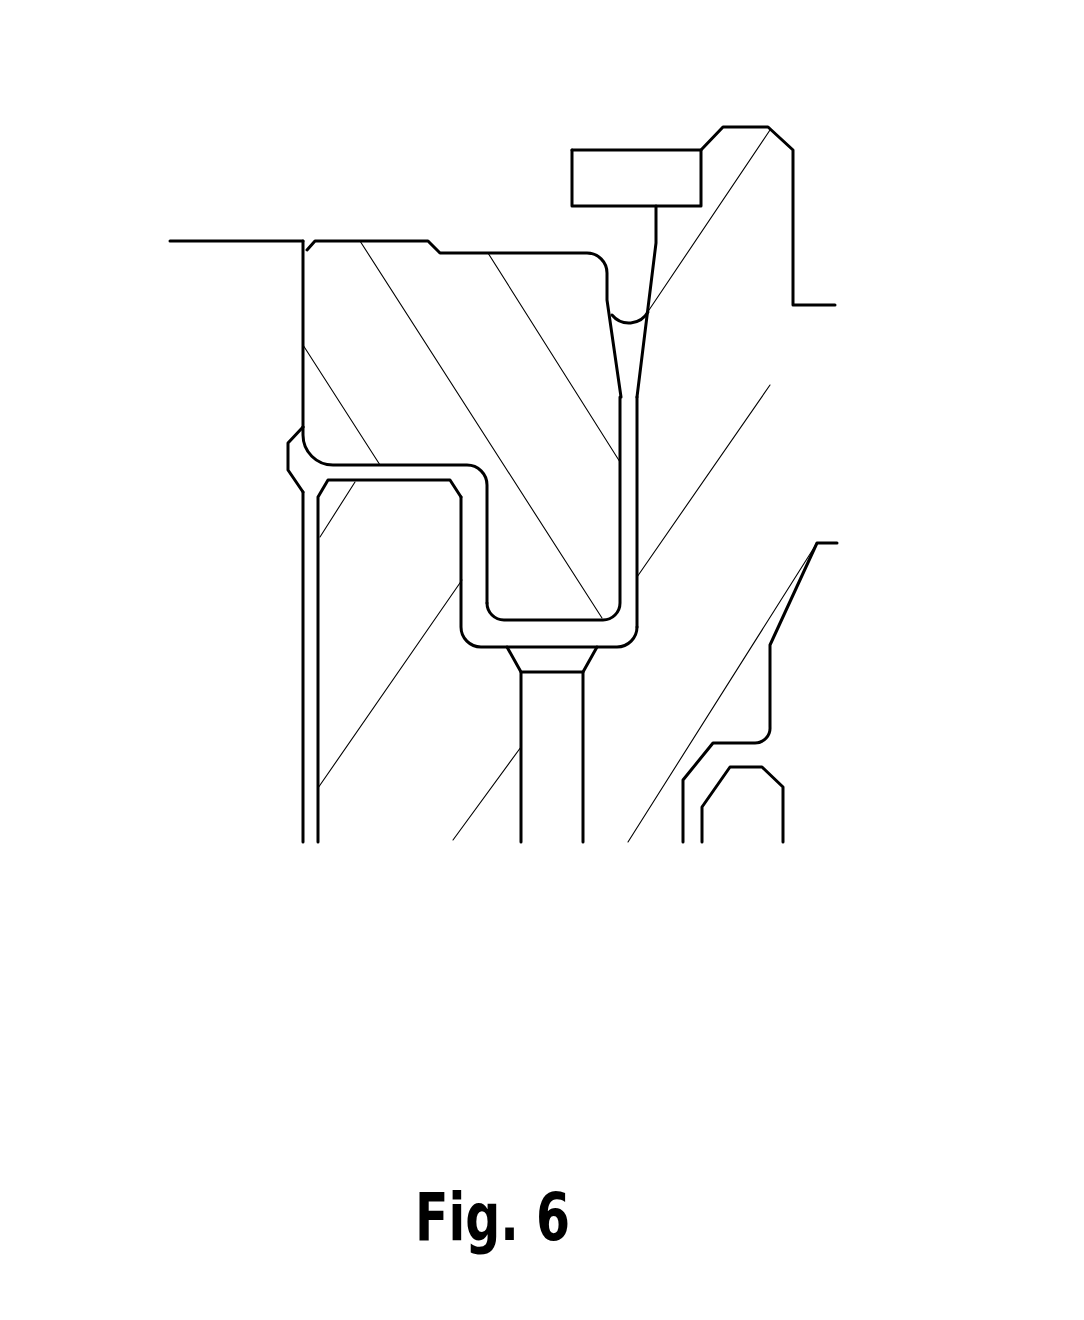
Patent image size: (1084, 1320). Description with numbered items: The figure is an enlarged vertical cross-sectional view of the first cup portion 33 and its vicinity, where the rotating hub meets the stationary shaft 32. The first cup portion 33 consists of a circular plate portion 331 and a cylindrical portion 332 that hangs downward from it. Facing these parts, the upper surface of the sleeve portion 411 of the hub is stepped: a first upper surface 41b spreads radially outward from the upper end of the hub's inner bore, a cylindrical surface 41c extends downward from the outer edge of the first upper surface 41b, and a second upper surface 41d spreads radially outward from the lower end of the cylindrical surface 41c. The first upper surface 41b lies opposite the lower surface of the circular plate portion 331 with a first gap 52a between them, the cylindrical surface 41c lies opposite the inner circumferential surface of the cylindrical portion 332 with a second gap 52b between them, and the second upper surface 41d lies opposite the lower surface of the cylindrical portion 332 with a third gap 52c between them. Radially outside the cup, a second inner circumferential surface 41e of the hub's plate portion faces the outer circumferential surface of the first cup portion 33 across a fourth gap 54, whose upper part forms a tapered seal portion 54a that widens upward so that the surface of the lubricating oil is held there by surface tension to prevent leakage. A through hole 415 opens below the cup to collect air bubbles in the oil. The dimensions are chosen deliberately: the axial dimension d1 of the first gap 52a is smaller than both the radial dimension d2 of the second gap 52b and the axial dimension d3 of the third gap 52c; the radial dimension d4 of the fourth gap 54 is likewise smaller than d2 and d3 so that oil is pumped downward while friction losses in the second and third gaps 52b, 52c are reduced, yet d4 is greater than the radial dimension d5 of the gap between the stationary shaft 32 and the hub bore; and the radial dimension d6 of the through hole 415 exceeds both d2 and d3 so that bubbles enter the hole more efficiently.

The stationary shaft 32 is at (230, 241).
The first cup portion 33 is at (533, 106).
The circular plate portion 331 is at (412, 365).
The cylindrical portion 332 is at (537, 527).
The first upper surface 41b is at (415, 465).
The cylindrical surface 41c is at (627, 477).
The second upper surface 41d is at (521, 645).
The second inner circumferential surface 41e is at (630, 432).
The sleeve portion 411 is at (367, 697).
The through hole 415 is at (547, 738).
The first gap 52a is at (350, 470).
The second gap 52b is at (475, 533).
The third gap 52c is at (547, 628).
The fourth gap 54 is at (462, 558).
The tapered seal portion 54a is at (629, 354).
The axial dimension of the first gap d1 is at (318, 481).
The radial dimension of the second gap d2 is at (461, 650).
The axial dimension of the third gap d3 is at (625, 619).
The radial dimension of the fourth gap d4 is at (636, 338).
The radial dimension of the gap between the stationary shaft and the hub d5 is at (303, 858).
The radial dimension of the through hole d6 is at (522, 858).